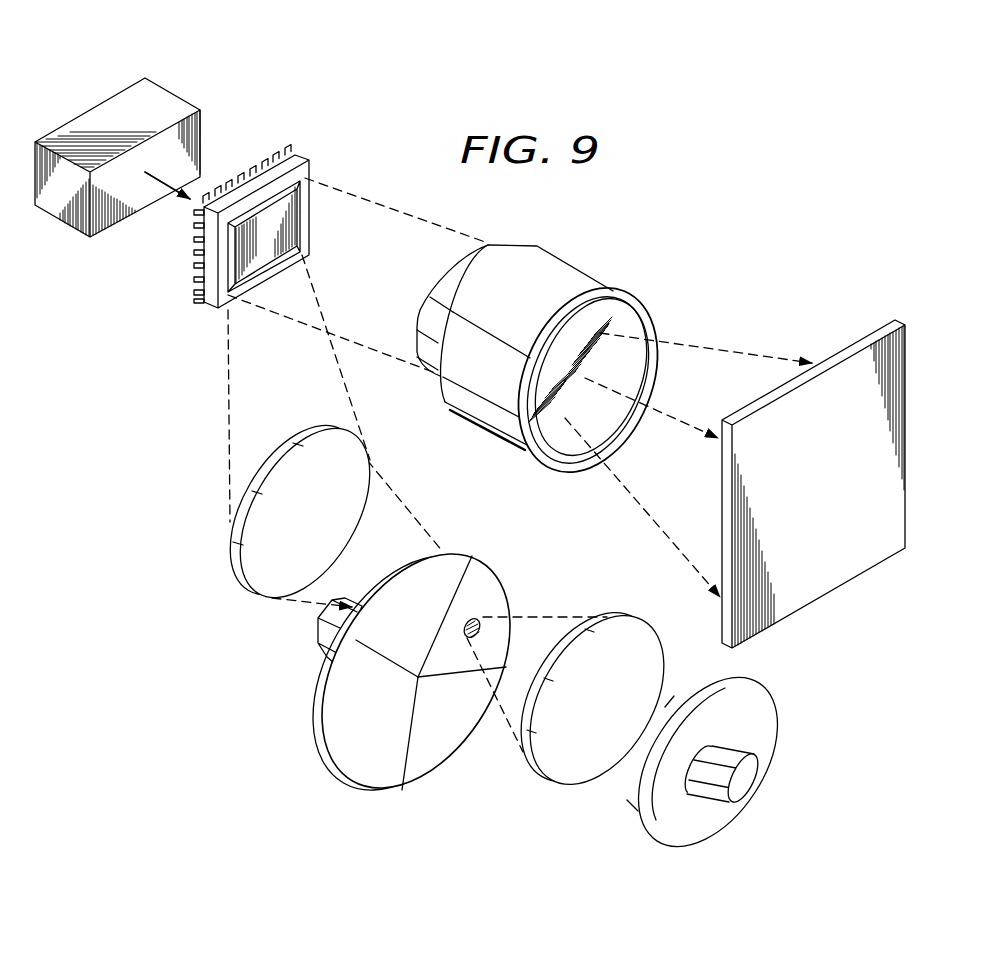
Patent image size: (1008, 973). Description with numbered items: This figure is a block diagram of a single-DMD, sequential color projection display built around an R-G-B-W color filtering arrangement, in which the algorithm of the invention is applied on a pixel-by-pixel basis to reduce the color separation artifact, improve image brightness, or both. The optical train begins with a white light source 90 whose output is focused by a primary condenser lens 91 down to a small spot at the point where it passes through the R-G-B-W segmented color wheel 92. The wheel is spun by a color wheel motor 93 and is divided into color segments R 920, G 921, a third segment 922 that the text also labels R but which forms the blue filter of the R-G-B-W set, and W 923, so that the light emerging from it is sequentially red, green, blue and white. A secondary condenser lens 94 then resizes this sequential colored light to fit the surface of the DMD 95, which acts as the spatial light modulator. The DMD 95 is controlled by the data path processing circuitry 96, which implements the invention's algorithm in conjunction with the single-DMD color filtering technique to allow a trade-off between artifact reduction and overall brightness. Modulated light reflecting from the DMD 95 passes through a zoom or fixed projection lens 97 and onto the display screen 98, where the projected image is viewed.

The white light source 90 is at (717, 815).
The primary condenser lens 91 is at (570, 782).
The R-G-B-W segmented color wheel 92 is at (411, 680).
The color segment R 920 is at (452, 750).
The color segment G 921 is at (373, 788).
The color segment R (blue segment) 922 is at (461, 562).
The color segment W 923 is at (501, 590).
The color wheel motor 93 is at (316, 636).
The secondary condenser lens 94 is at (232, 556).
The DMD 95 is at (300, 157).
The data path processing circuitry 96 is at (100, 108).
The projection lens 97 is at (572, 279).
The display screen 98 is at (823, 585).